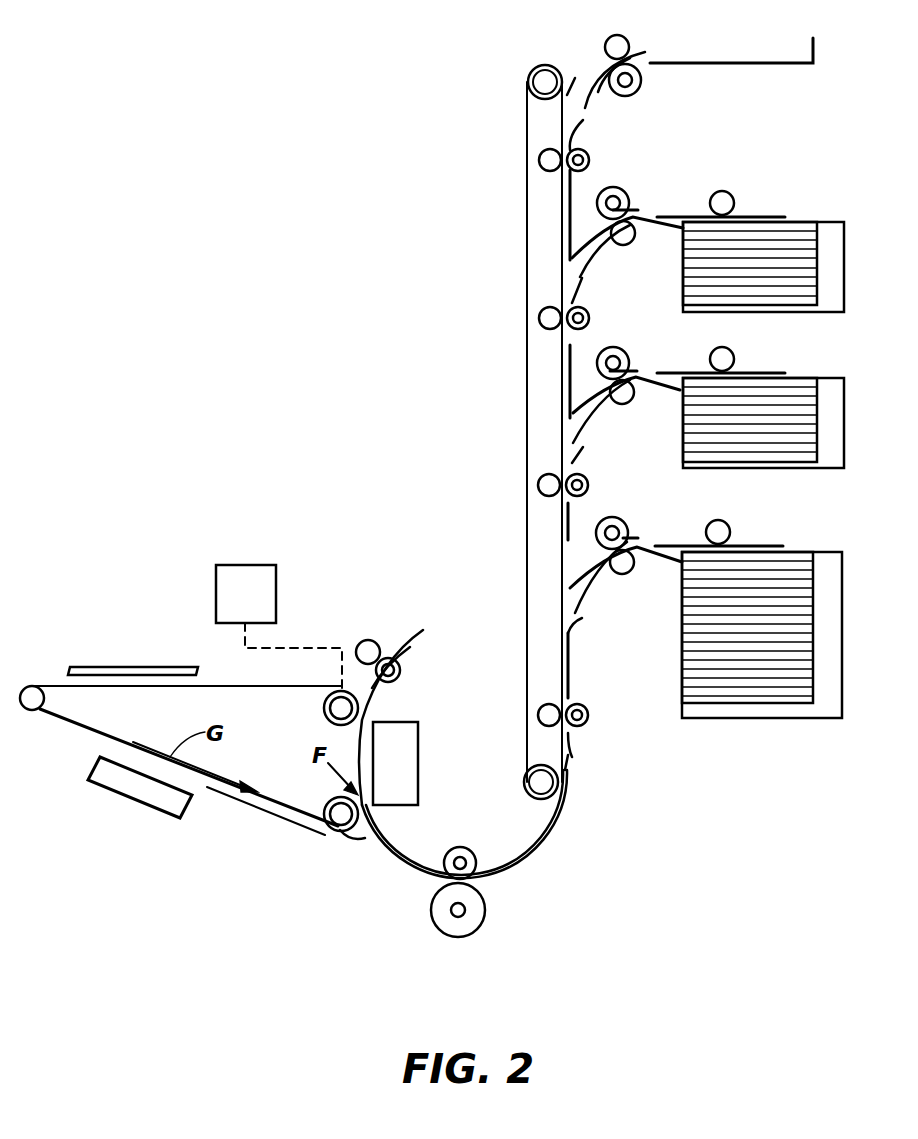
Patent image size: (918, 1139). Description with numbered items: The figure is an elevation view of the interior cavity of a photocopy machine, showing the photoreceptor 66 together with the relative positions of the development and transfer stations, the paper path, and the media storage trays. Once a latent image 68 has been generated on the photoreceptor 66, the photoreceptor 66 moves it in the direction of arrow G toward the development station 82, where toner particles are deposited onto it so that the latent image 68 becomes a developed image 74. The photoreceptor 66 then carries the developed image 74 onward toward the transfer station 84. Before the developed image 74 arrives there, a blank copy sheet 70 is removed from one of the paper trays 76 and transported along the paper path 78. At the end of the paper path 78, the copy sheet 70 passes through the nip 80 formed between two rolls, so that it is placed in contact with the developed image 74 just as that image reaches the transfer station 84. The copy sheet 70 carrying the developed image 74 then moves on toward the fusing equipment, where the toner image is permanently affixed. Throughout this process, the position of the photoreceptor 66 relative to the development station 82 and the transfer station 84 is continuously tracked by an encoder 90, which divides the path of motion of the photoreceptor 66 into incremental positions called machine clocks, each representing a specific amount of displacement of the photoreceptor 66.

The photoreceptor 66 is at (68, 730).
The latent image 68 is at (68, 670).
The copy sheet 70 is at (682, 217).
The developed image 74 is at (287, 822).
The paper trays 76 is at (844, 268).
The paper path 78 is at (560, 368).
The nip 80 is at (487, 885).
The development station 82 is at (145, 807).
The transfer station 84 is at (420, 758).
The encoder 90 is at (279, 627).